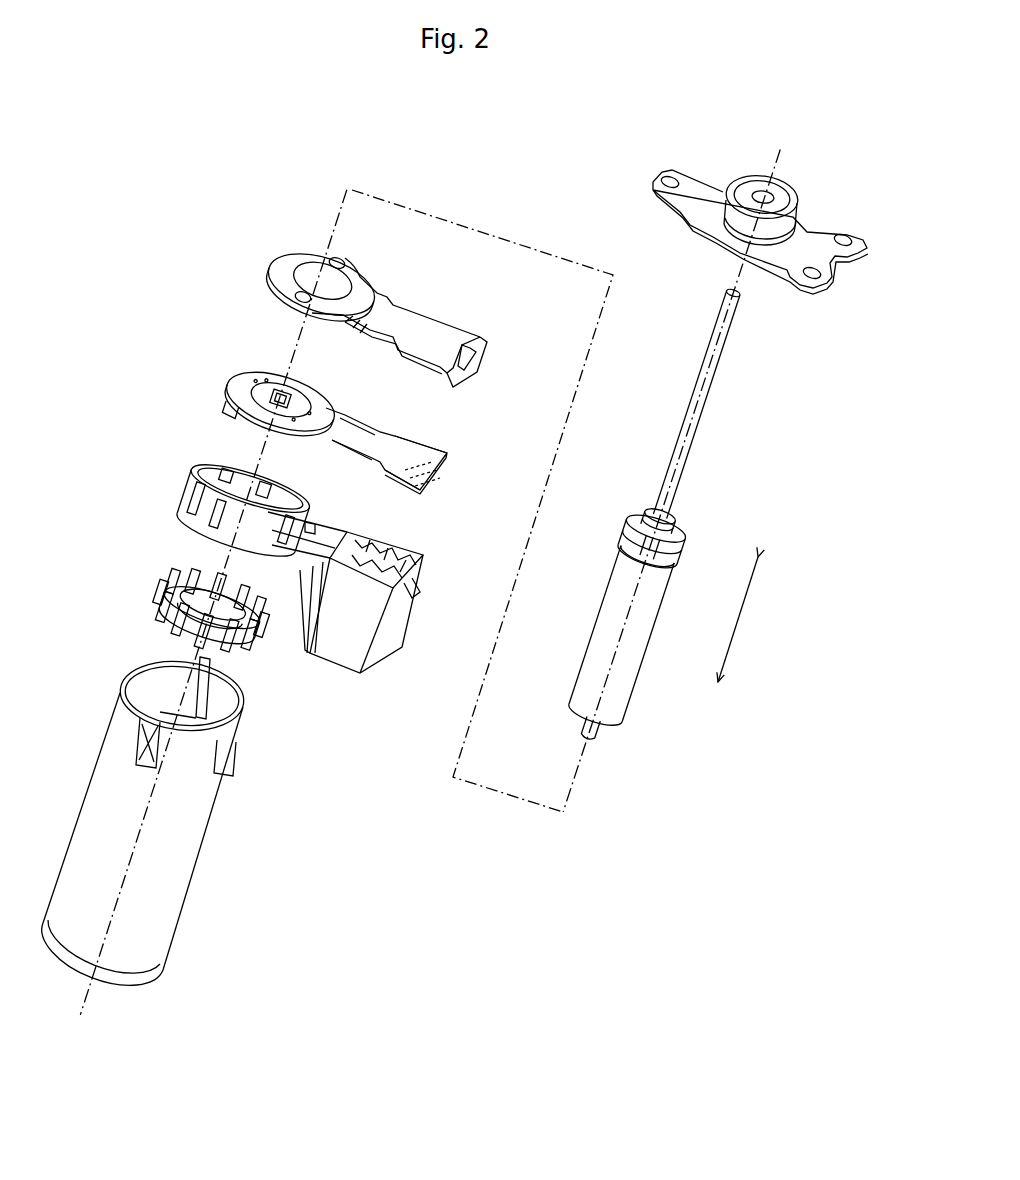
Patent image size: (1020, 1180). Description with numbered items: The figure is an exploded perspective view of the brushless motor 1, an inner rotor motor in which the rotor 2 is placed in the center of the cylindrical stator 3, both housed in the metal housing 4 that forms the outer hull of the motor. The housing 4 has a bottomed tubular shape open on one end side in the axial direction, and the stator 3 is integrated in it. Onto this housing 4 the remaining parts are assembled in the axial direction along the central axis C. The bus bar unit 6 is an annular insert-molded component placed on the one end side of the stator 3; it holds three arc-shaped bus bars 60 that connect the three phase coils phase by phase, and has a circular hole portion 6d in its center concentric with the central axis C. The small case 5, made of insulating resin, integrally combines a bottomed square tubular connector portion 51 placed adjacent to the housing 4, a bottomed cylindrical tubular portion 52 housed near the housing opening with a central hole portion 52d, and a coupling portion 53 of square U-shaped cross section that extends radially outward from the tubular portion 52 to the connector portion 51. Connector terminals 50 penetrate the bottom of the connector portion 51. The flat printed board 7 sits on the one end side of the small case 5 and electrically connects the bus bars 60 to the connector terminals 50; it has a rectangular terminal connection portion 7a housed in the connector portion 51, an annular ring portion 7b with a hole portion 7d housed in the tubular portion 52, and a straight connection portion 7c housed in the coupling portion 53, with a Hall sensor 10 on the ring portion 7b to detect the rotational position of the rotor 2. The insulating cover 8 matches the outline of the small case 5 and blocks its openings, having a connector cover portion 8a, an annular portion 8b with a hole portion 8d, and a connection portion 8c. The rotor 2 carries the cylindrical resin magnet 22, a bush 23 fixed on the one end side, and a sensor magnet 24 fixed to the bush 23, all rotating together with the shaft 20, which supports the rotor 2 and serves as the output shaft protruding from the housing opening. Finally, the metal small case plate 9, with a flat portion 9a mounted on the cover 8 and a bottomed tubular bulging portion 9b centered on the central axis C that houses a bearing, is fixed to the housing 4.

The brushless motor 1 is at (172, 162).
The rotor 2 is at (625, 712).
The stator 3 is at (160, 715).
The housing 4 is at (175, 935).
The small case 5 is at (185, 470).
The bus bar unit 6 is at (160, 577).
The hole portion 6d is at (210, 595).
The printed board 7 is at (220, 372).
The terminal connection portion 7a is at (430, 455).
The ring portion 7b is at (325, 407).
The connection portion 7c is at (366, 433).
The hole portion 7d is at (263, 380).
The cover 8 is at (265, 262).
The connector cover portion 8a is at (452, 323).
The annular portion 8b is at (276, 280).
The connection portion 8c is at (395, 306).
The hole portion 8d is at (320, 266).
The small case plate 9 is at (803, 293).
The flat portion 9a is at (830, 238).
The bulging portion 9b is at (752, 185).
The Hall sensor 10 is at (232, 418).
The shaft 20 is at (708, 425).
The magnet 22 is at (576, 678).
The bush 23 is at (622, 548).
The sensor magnet 24 is at (632, 524).
The connector terminals 50 is at (412, 545).
The connector portion 51 is at (366, 682).
The tubular portion 52 is at (192, 516).
The hole portion 52d is at (288, 490).
The coupling portion 53 is at (330, 526).
The bus bars 60 is at (265, 640).
The central axis C is at (674, 466).